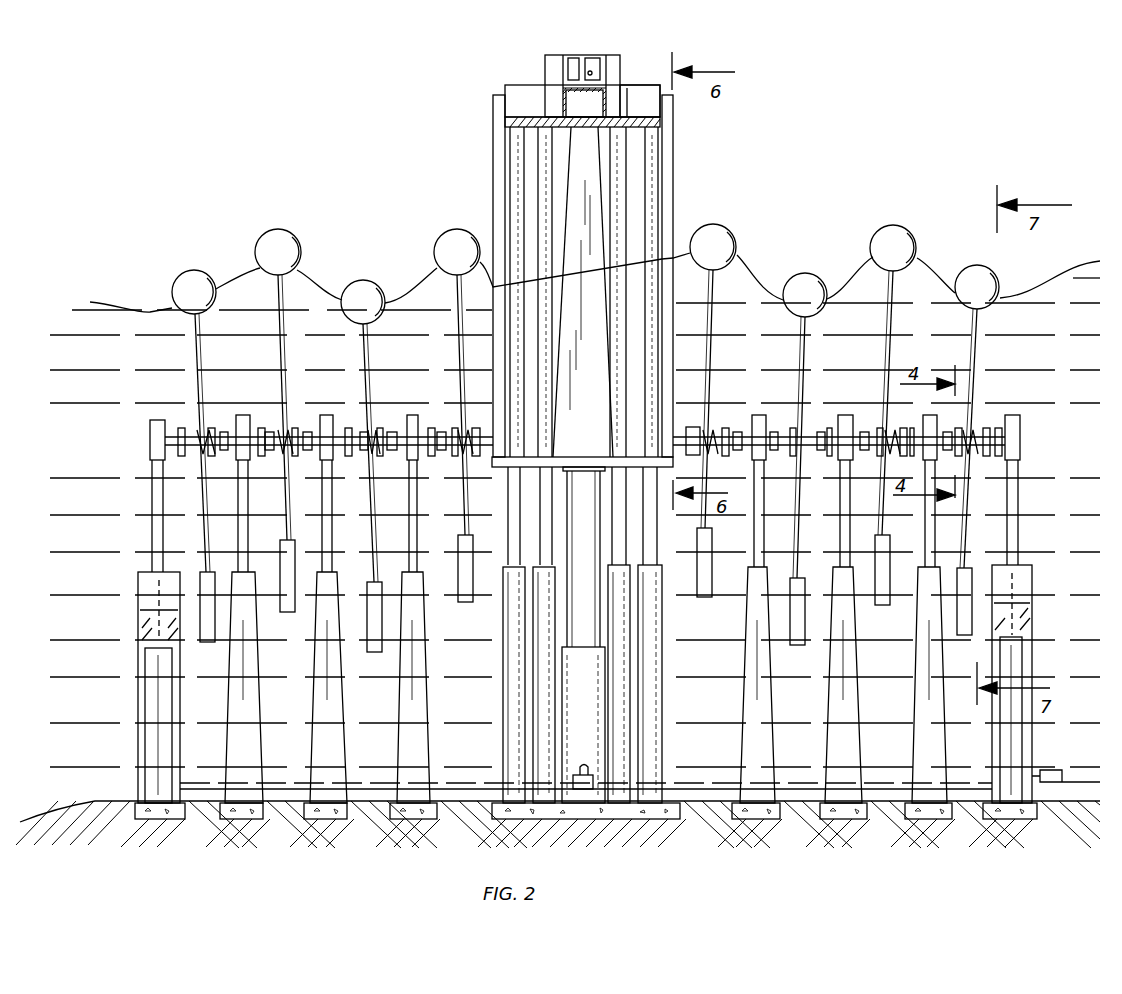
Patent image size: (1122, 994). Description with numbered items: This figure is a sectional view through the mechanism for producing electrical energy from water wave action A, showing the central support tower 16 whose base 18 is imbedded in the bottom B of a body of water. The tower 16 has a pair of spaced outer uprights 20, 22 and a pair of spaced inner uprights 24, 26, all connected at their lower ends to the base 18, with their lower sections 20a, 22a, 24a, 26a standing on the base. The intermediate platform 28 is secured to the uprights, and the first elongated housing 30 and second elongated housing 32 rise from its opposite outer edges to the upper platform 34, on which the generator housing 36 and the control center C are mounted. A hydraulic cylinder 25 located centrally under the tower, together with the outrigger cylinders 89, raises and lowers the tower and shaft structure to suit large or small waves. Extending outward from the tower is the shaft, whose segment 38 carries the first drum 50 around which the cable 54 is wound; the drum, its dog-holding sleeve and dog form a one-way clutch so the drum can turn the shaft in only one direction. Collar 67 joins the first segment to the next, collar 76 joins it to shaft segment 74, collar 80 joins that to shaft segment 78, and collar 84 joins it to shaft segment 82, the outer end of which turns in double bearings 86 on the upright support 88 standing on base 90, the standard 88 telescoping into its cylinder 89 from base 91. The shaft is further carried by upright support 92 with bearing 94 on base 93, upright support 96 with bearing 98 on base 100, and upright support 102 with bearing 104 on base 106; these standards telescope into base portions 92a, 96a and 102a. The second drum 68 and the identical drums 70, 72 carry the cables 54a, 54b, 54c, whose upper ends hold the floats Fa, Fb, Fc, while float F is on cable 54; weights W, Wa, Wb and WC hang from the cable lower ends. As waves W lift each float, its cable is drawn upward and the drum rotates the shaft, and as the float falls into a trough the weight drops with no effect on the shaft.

The mechanism for producing electrical energy from water wave action A is at (468, 128).
The bottom of a body of water B is at (720, 802).
The control center C is at (579, 46).
The central support tower 16 is at (690, 170).
The base 18 is at (606, 820).
The outer upright 20 is at (650, 220).
The tower column lower section 20a is at (660, 623).
The outer upright 22 is at (510, 175).
The tower column lower section 22a is at (505, 618).
The inner upright 24 is at (617, 173).
The tower column lower section 24a is at (625, 670).
The hydraulic cylinder 25 is at (592, 748).
The inner upright 26 is at (545, 148).
The tower column lower section 26a is at (540, 655).
The intermediate platform 28 is at (603, 437).
The first elongated housing 30 is at (673, 236).
The second elongated housing 32 is at (495, 206).
The upper platform 34 is at (627, 116).
The generator housing 36 is at (648, 85).
The shaft segment 38 is at (690, 427).
The first drum 50 is at (460, 454).
The elongated member 54 is at (460, 352).
The cable 54a is at (366, 352).
The cable 54b is at (280, 350).
The cable 54c is at (197, 352).
The collar 67 is at (440, 432).
The second drum 68 is at (362, 450).
The drum 70 is at (268, 430).
The drum 72 is at (182, 428).
The shaft segment 74 is at (776, 432).
The collar 76 is at (392, 432).
The shaft segment 78 is at (903, 428).
The collar 80 is at (307, 432).
The shaft segment 82 is at (987, 456).
The collar 84 is at (947, 450).
The double bearings 86 is at (1003, 424).
The upright support 88 is at (140, 535).
The outrigger cylinder 89 is at (152, 692).
The base 90 is at (175, 820).
The base 91 is at (178, 690).
The upright support 92 is at (248, 513).
The base portion 92a is at (254, 708).
The base 93 is at (249, 820).
The bearing 94 is at (892, 458).
The upright support 96 is at (332, 513).
The base portion 96a is at (340, 712).
The bearing 98 is at (845, 415).
The base 100 is at (331, 820).
The upright support 102 is at (430, 506).
The base portion 102a is at (424, 700).
The bearing 104 is at (740, 432).
The base 106 is at (415, 820).
The float F is at (440, 243).
The float Fa is at (366, 284).
The float Fb is at (290, 244).
The float Fc is at (212, 274).
The weight / waves W is at (252, 264).
The weight Wa is at (376, 582).
The weight Wb is at (288, 612).
The weight WC is at (207, 642).